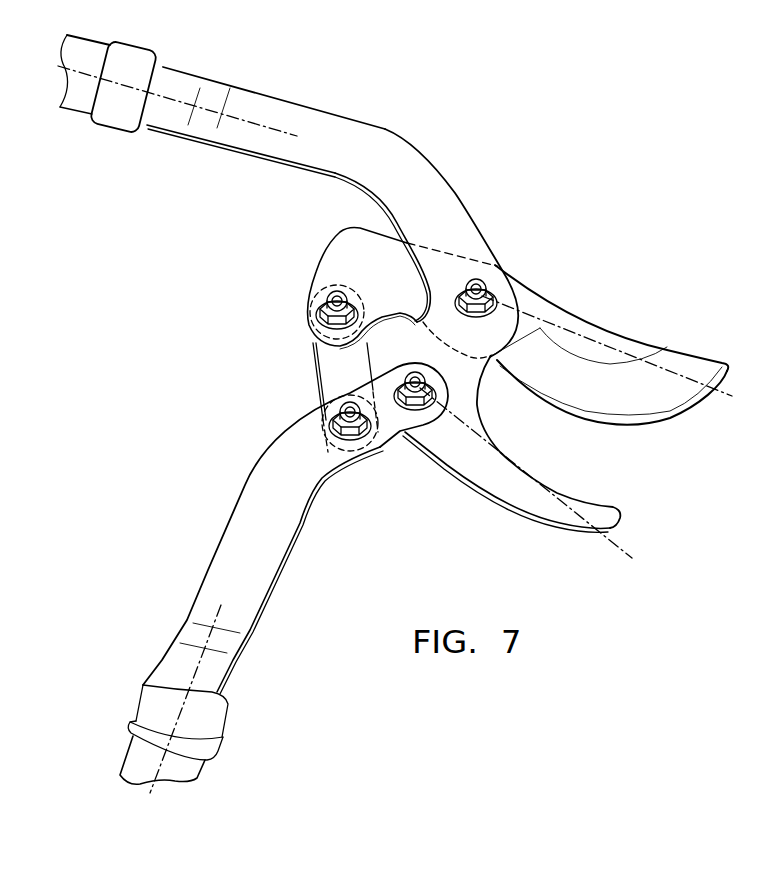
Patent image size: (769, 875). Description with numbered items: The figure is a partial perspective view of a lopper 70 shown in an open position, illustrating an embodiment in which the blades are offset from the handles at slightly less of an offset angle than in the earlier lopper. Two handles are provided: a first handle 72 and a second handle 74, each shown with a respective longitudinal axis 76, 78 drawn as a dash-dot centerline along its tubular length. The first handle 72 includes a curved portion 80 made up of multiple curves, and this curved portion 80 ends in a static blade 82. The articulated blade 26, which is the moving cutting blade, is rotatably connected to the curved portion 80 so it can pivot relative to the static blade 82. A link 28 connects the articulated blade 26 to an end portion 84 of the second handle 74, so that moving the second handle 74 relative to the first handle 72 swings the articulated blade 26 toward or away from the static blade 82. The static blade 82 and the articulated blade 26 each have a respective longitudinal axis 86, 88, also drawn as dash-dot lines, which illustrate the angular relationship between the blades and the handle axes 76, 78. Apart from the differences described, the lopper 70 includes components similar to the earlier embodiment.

The lopper 70 is at (583, 184).
The first handle 72 is at (177, 82).
The second handle 74 is at (160, 703).
The longitudinal axis 76 is at (60, 66).
The longitudinal axis 78 is at (158, 767).
The curved portion 80 is at (438, 208).
The static blade 82 is at (497, 487).
The end portion 84 is at (391, 437).
The longitudinal axis 86 is at (604, 542).
The longitudinal axis 88 is at (720, 390).
The articulated blade 26 is at (597, 332).
The link 28 is at (336, 375).